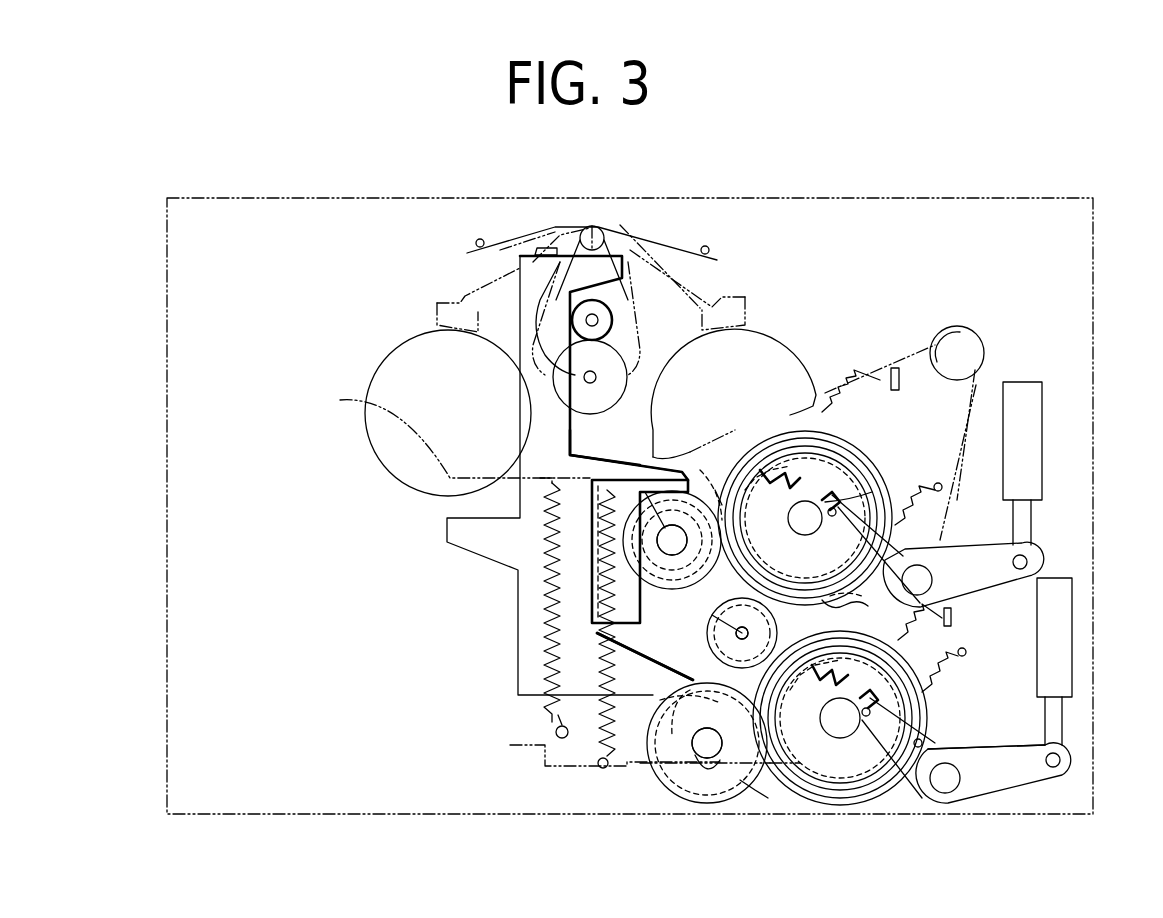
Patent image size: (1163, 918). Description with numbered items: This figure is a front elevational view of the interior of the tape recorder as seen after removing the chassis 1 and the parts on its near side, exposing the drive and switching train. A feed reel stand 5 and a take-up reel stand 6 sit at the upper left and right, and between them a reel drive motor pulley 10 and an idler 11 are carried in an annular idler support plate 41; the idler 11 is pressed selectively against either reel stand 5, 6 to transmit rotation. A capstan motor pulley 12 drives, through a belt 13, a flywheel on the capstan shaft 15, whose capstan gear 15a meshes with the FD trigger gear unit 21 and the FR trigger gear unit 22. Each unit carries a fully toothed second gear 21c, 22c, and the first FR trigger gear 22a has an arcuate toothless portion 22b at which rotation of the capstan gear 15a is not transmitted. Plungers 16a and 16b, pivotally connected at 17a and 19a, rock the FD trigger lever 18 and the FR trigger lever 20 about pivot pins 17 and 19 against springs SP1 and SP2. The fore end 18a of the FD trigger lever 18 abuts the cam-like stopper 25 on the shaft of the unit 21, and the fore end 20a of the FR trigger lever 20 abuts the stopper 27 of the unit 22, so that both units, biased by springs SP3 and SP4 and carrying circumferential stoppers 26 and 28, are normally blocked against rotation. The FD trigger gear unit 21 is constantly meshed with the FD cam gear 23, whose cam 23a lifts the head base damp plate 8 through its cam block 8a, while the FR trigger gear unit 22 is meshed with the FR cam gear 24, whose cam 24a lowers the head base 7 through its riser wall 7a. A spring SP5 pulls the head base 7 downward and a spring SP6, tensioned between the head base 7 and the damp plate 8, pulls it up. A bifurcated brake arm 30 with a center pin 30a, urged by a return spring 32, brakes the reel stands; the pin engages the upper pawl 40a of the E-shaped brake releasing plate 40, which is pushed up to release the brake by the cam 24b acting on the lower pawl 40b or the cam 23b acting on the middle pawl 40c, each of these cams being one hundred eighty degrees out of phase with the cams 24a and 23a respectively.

The chassis 1 is at (373, 198).
The feed reel stand 5 is at (400, 407).
The take-up reel stand 6 is at (770, 352).
The head base 7 is at (510, 735).
The riser wall 7a is at (735, 795).
The head base damp plate 8 is at (625, 618).
The cam block 8a is at (648, 476).
The reel drive motor pulley 10 is at (605, 316).
The idler 11 is at (612, 395).
The capstan motor pulley 12 is at (968, 338).
The belt 13 is at (962, 470).
The capstan shaft 15 is at (705, 625).
The capstan gear 15a is at (718, 655).
The plunger 16a is at (1030, 422).
The plunger 16b is at (1075, 615).
The pivot pin 17 is at (920, 565).
The pivotal connection 17a is at (1026, 560).
The FD trigger lever 18 is at (968, 585).
The fore end of FD trigger lever 18a is at (833, 520).
The pivot pin 19 is at (975, 790).
The pivotal connection 19a is at (1062, 760).
The FR trigger lever 20 is at (995, 760).
The fore end of FR trigger lever 20a is at (872, 450).
The FD trigger gear unit 21 is at (872, 475).
The second FD trigger gear 21c is at (780, 540).
The FR trigger gear unit 22 is at (870, 775).
The first FR trigger gear 22a is at (912, 685).
The toothless portion 22b is at (785, 650).
The second FR trigger gear 22c is at (812, 785).
The FD cam gear 23 is at (575, 590).
The cam 23a is at (655, 560).
The cam 23b is at (705, 495).
The FR cam gear 24 is at (690, 790).
The cam 24a is at (680, 772).
The cam 24b is at (845, 604).
The cam-like stopper 25 is at (872, 492).
The stopper 26 is at (790, 474).
The cam-like stopper 27 is at (830, 675).
The stopper 28 is at (821, 718).
The bifurcated brake arm 30 is at (485, 292).
The center portion pin of brake arm 30a is at (596, 226).
The return spring 32 is at (510, 240).
The brake releasing plate 40 is at (478, 540).
The upper pawl 40a is at (540, 250).
The lower pawl 40b is at (645, 684).
The middle pawl 40c is at (600, 470).
The idler support plate 41 is at (630, 328).
The spring SP1 is at (925, 520).
The spring SP2 is at (945, 708).
The spring SP3 is at (852, 400).
The spring SP4 is at (910, 640).
The spring SP5 is at (548, 605).
The spring SP6 is at (600, 660).